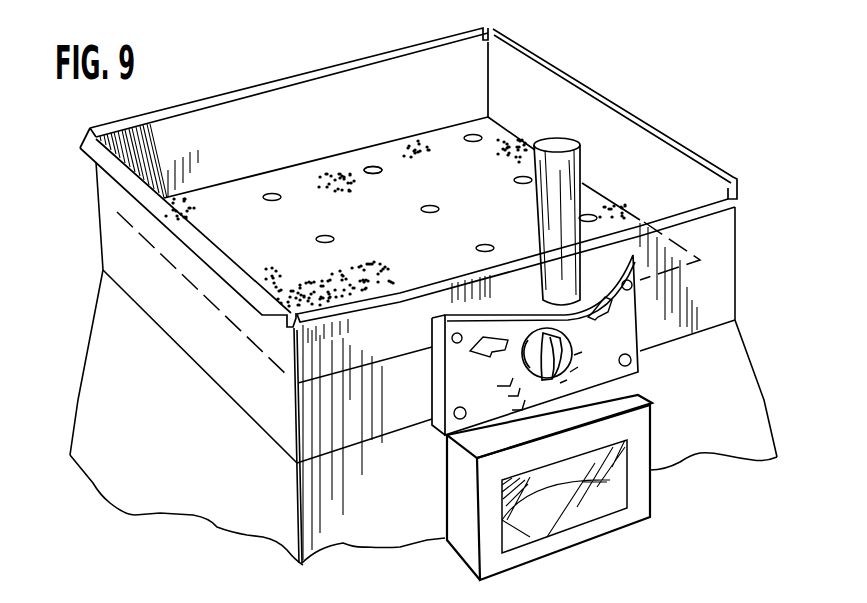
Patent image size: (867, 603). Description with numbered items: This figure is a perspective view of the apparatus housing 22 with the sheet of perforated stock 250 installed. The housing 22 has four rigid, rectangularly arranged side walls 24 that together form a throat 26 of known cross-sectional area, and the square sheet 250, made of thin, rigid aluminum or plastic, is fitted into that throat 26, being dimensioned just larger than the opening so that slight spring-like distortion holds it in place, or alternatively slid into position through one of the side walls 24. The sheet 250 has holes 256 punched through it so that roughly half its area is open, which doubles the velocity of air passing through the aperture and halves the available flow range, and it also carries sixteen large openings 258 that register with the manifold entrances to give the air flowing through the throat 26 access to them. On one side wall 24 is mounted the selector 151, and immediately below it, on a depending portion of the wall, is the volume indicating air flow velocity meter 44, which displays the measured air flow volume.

The housing 22 is at (103, 234).
The side walls 24 is at (442, 82).
The throat 26 is at (163, 160).
The volume indicating air flow velocity meter 44 is at (462, 517).
The selector 151 is at (431, 392).
The sheet of perforated stock 250 is at (251, 208).
The holes 256 is at (331, 177).
The large openings 258 is at (377, 165).